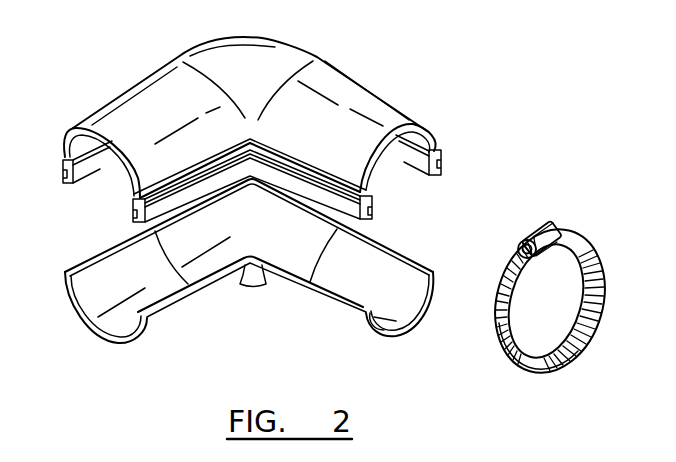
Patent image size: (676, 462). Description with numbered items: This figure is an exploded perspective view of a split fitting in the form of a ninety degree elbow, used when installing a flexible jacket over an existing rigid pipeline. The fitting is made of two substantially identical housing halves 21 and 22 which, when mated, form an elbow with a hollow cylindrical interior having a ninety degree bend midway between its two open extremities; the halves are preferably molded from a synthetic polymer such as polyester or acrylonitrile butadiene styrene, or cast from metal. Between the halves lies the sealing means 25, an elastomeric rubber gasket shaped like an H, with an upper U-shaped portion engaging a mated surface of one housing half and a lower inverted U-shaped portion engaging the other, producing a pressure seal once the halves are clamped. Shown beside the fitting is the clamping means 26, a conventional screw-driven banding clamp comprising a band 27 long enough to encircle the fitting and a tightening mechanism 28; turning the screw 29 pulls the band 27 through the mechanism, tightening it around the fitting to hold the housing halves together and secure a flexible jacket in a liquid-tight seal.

The housing half 21 is at (298, 288).
The housing half 22 is at (285, 55).
The sealing means 25 is at (84, 171).
The clamping means 26 is at (486, 342).
The band 27 is at (588, 303).
The tightening mechanism 28 is at (547, 231).
The screw 29 is at (518, 246).